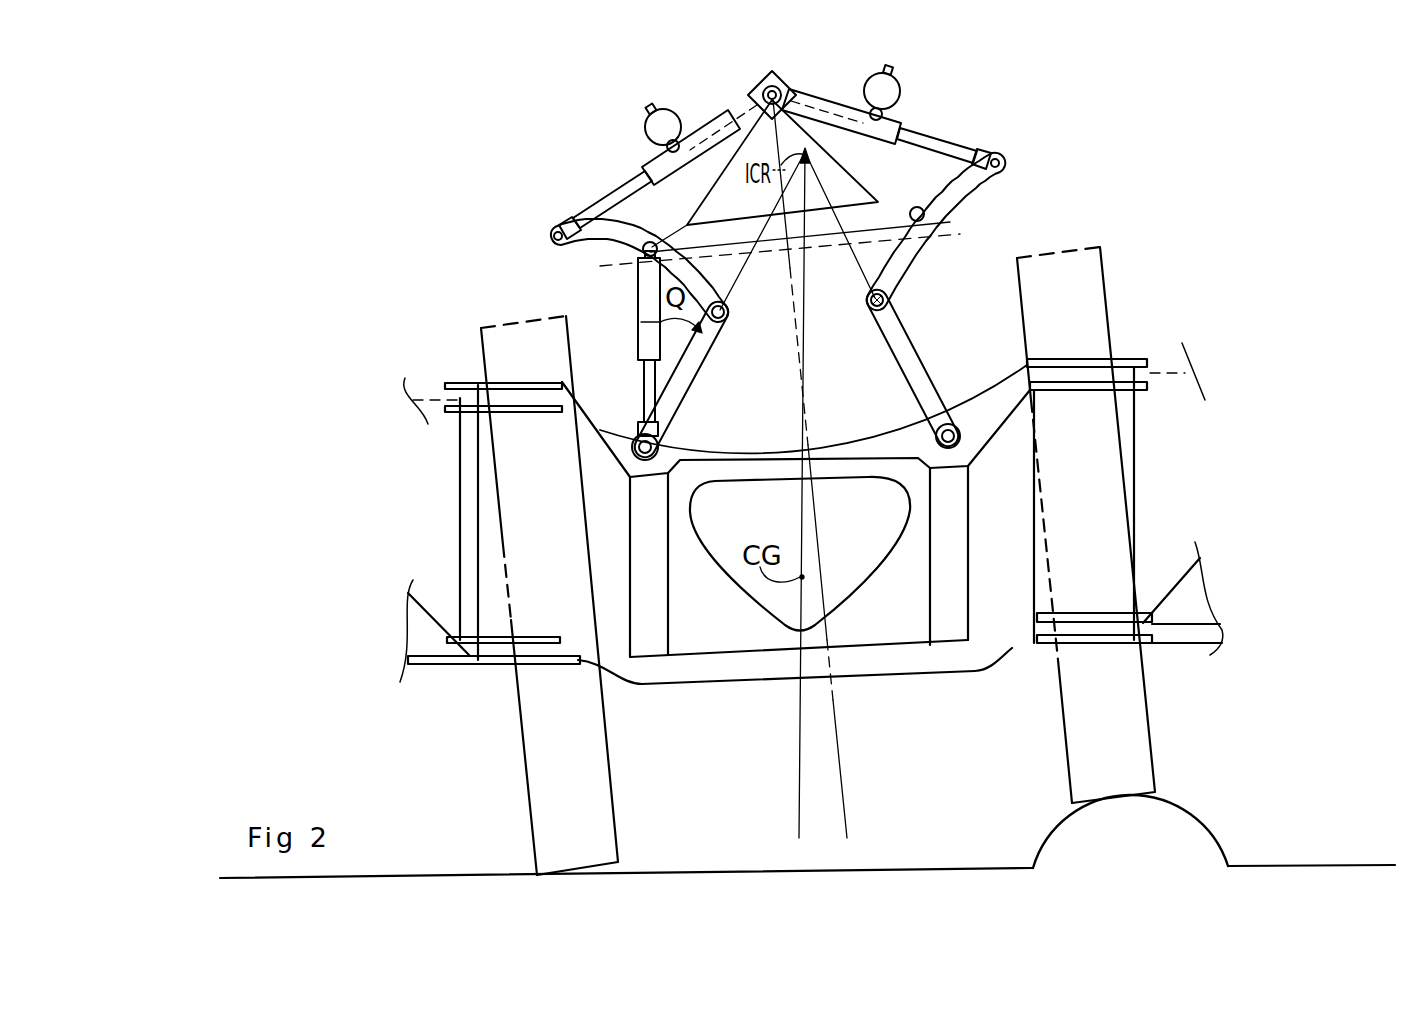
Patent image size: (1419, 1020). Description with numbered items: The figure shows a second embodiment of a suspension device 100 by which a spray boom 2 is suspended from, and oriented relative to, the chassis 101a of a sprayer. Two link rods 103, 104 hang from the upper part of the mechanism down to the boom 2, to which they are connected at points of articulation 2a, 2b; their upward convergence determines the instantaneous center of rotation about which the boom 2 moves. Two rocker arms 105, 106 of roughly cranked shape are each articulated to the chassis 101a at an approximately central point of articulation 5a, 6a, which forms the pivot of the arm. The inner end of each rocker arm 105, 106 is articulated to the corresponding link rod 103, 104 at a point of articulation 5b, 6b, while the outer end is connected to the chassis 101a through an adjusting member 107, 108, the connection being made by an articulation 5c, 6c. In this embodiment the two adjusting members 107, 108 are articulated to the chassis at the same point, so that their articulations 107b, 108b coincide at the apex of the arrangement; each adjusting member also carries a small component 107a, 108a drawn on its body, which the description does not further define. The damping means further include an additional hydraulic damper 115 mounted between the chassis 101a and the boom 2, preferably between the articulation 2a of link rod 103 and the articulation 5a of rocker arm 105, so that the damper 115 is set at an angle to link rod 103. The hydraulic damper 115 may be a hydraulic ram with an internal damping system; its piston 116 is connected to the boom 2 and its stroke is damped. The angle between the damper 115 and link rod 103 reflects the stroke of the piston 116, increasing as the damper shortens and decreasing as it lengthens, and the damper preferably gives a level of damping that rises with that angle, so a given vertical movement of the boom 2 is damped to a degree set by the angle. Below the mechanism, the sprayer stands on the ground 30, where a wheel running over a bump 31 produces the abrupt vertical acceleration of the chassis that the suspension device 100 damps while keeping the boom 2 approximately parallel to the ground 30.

The spray boom 2 is at (415, 677).
The point of articulation 2a is at (656, 439).
The point of articulation 2b is at (939, 430).
The point of articulation 5a is at (637, 287).
The point of articulation 5b is at (730, 312).
The articulation 5c is at (556, 230).
The point of articulation 6a is at (922, 222).
The point of articulation 6b is at (875, 310).
The articulation 6c is at (1005, 152).
The ground 30 is at (853, 867).
The bump 31 is at (1205, 812).
The suspension device 100 is at (988, 108).
The chassis 101a is at (672, 222).
The link rod 103 is at (697, 371).
The link rod 104 is at (917, 357).
The rocker arm 105 is at (597, 240).
The rocker arm 106 is at (965, 190).
The adjusting member 107 is at (727, 120).
The actuator sensor 107a is at (644, 132).
The articulation 107b is at (700, 80).
The adjusting member 108 is at (836, 102).
The actuator sensor 108a is at (900, 90).
The articulation 108b is at (752, 84).
The hydraulic damper 115 is at (639, 334).
The piston 116 is at (644, 408).